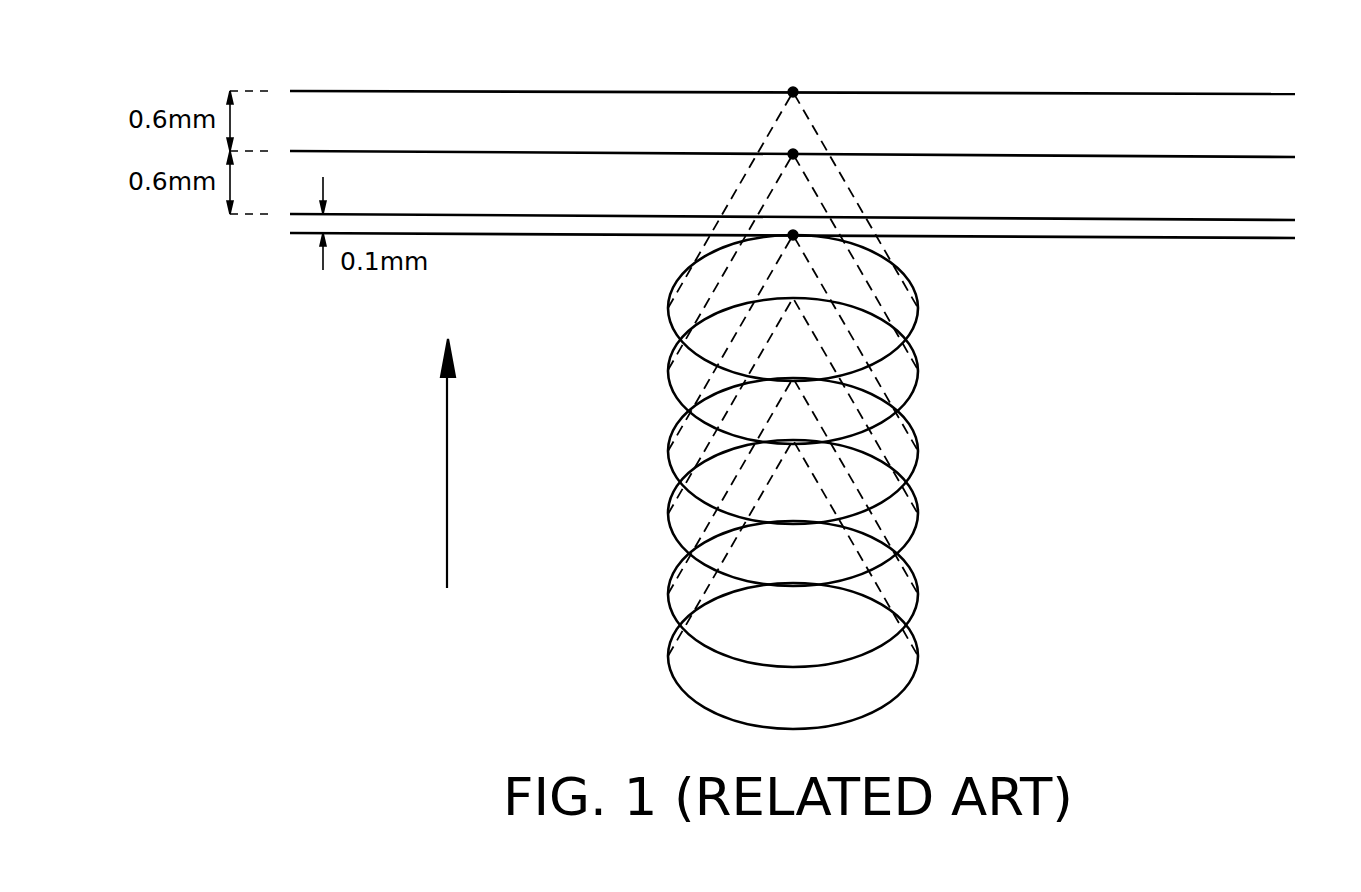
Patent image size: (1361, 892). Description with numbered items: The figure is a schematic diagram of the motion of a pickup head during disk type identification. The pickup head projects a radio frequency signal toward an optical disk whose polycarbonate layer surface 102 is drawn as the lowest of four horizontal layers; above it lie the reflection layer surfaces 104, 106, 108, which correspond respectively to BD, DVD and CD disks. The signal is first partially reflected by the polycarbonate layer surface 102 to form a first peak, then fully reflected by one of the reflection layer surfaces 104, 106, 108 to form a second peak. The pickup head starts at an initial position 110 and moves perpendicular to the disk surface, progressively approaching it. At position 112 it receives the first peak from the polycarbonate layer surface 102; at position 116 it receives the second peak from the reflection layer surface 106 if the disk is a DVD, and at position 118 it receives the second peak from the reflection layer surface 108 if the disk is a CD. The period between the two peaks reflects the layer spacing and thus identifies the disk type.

The polycarbonate layer surface 102 is at (1263, 238).
The reflection layer surface 104 is at (1263, 220).
The reflection layer surface 106 is at (1263, 157).
The reflection layer surface 108 is at (1263, 94).
The initial position 110 is at (915, 653).
The position 112 is at (918, 452).
The position 116 is at (918, 369).
The position 118 is at (918, 308).